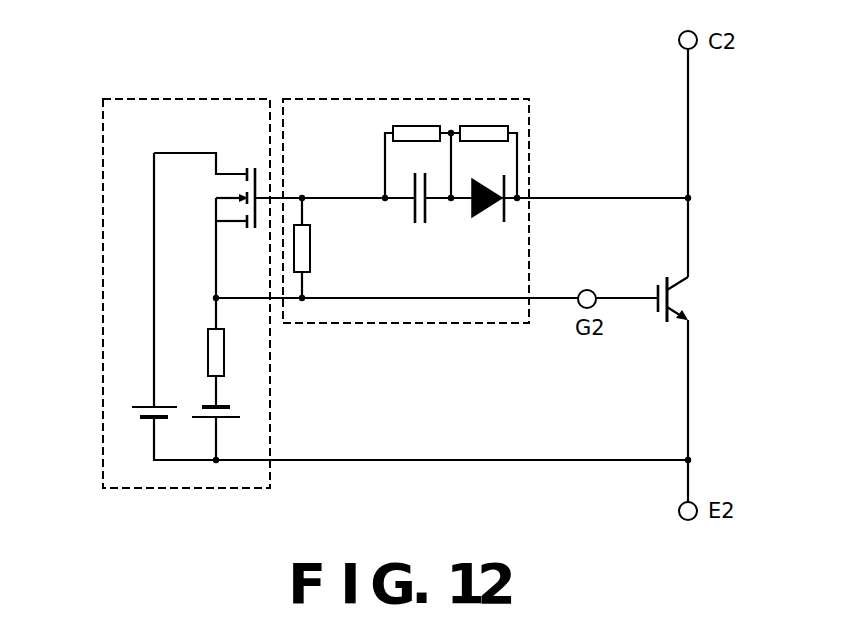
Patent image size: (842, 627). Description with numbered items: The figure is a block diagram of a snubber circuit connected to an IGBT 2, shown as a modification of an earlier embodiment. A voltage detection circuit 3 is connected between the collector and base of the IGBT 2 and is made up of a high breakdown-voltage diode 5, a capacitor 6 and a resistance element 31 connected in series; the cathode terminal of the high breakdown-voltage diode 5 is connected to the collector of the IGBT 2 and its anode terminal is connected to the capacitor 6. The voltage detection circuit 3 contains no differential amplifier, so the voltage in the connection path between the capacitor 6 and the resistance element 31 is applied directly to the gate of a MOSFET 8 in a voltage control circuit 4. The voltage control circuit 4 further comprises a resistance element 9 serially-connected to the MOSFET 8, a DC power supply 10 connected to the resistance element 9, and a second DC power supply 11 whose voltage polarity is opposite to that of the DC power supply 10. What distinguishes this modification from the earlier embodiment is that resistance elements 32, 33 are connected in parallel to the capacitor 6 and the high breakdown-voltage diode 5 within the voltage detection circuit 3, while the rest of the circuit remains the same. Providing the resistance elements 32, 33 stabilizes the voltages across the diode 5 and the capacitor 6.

The IGBT 2 is at (690, 299).
The voltage detection circuit 3 is at (477, 98).
The voltage control circuit 4 is at (241, 98).
The high breakdown-voltage diode 5 is at (486, 210).
The capacitor 6 is at (409, 186).
The MOSFET 8 is at (230, 192).
The resistance element 9 is at (207, 347).
The DC power supply 10 is at (247, 416).
The DC power supply 11 is at (125, 408).
The resistance element 31 is at (311, 249).
The resistance element 32 is at (509, 128).
The resistance element 33 is at (393, 128).